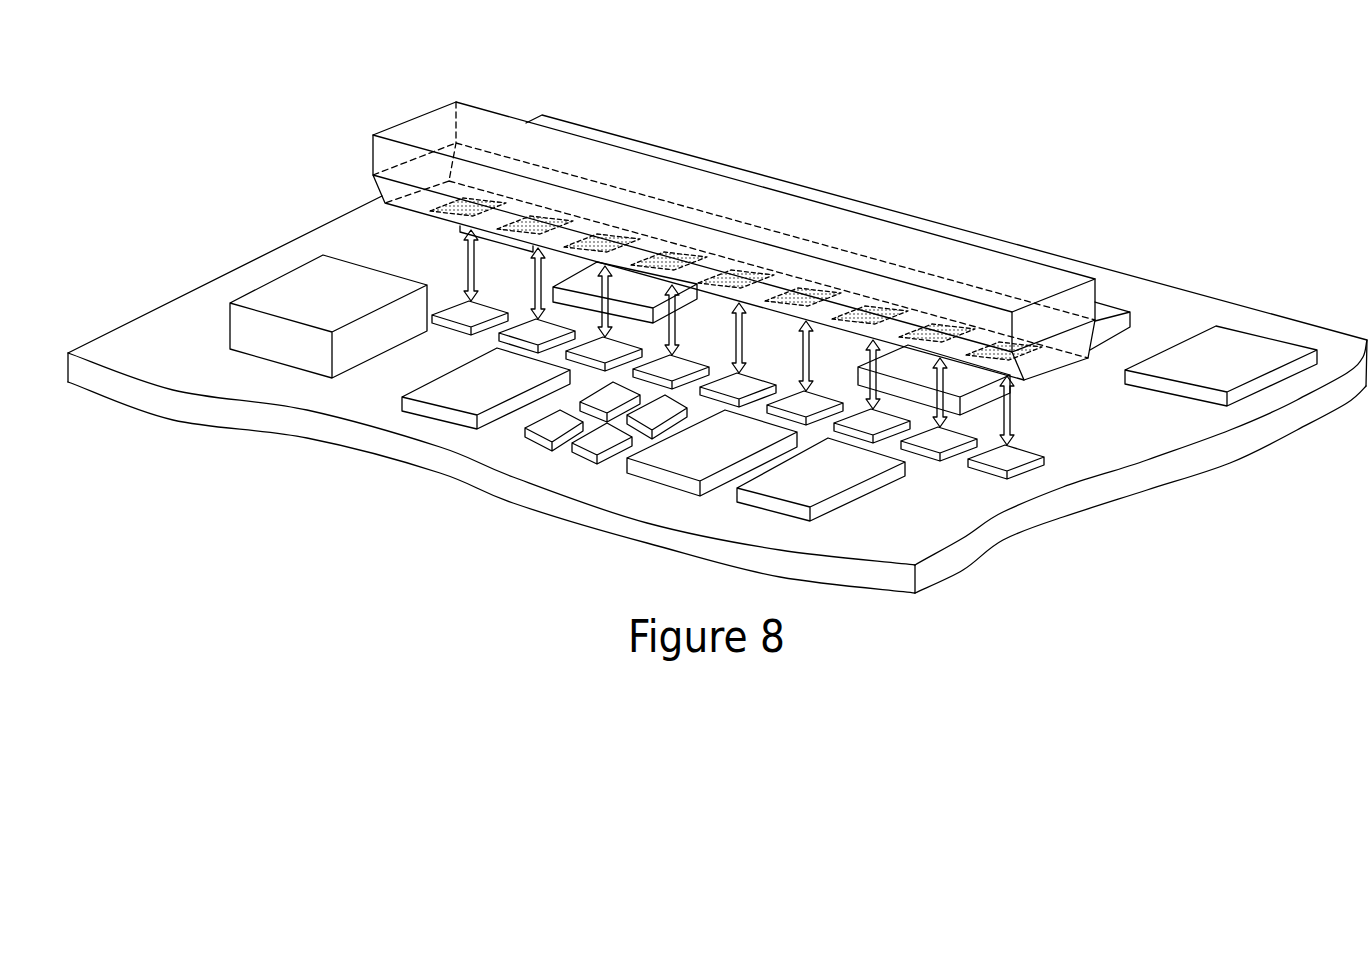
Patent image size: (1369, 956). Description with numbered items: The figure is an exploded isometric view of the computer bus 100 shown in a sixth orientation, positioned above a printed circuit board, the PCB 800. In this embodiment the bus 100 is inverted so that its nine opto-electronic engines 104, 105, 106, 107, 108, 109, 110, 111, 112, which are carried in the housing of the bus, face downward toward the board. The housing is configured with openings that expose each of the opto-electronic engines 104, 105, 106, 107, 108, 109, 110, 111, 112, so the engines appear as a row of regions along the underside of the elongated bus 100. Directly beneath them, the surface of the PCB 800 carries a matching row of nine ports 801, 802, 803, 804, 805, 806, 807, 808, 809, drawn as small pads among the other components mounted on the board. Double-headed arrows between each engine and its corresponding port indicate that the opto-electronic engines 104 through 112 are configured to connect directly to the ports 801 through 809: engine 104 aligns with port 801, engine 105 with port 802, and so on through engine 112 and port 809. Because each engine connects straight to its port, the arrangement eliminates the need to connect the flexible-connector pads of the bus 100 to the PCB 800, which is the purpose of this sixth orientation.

The bus 100 is at (422, 97).
The opto-electronic engine 104 is at (478, 202).
The opto-electronic engine 105 is at (545, 220).
The opto-electronic engine 106 is at (612, 238).
The opto-electronic engine 107 is at (679, 256).
The opto-electronic engine 108 is at (746, 274).
The opto-electronic engine 109 is at (813, 292).
The opto-electronic engine 110 is at (880, 310).
The opto-electronic engine 111 is at (947, 328).
The opto-electronic engine 112 is at (1014, 346).
The PCB 800 is at (1127, 285).
The port 801 is at (483, 304).
The port 802 is at (539, 332).
The port 803 is at (611, 350).
The port 804 is at (676, 367).
The port 805 is at (744, 381).
The port 806 is at (814, 395).
The port 807 is at (883, 423).
The port 808 is at (961, 433).
The port 809 is at (1027, 455).